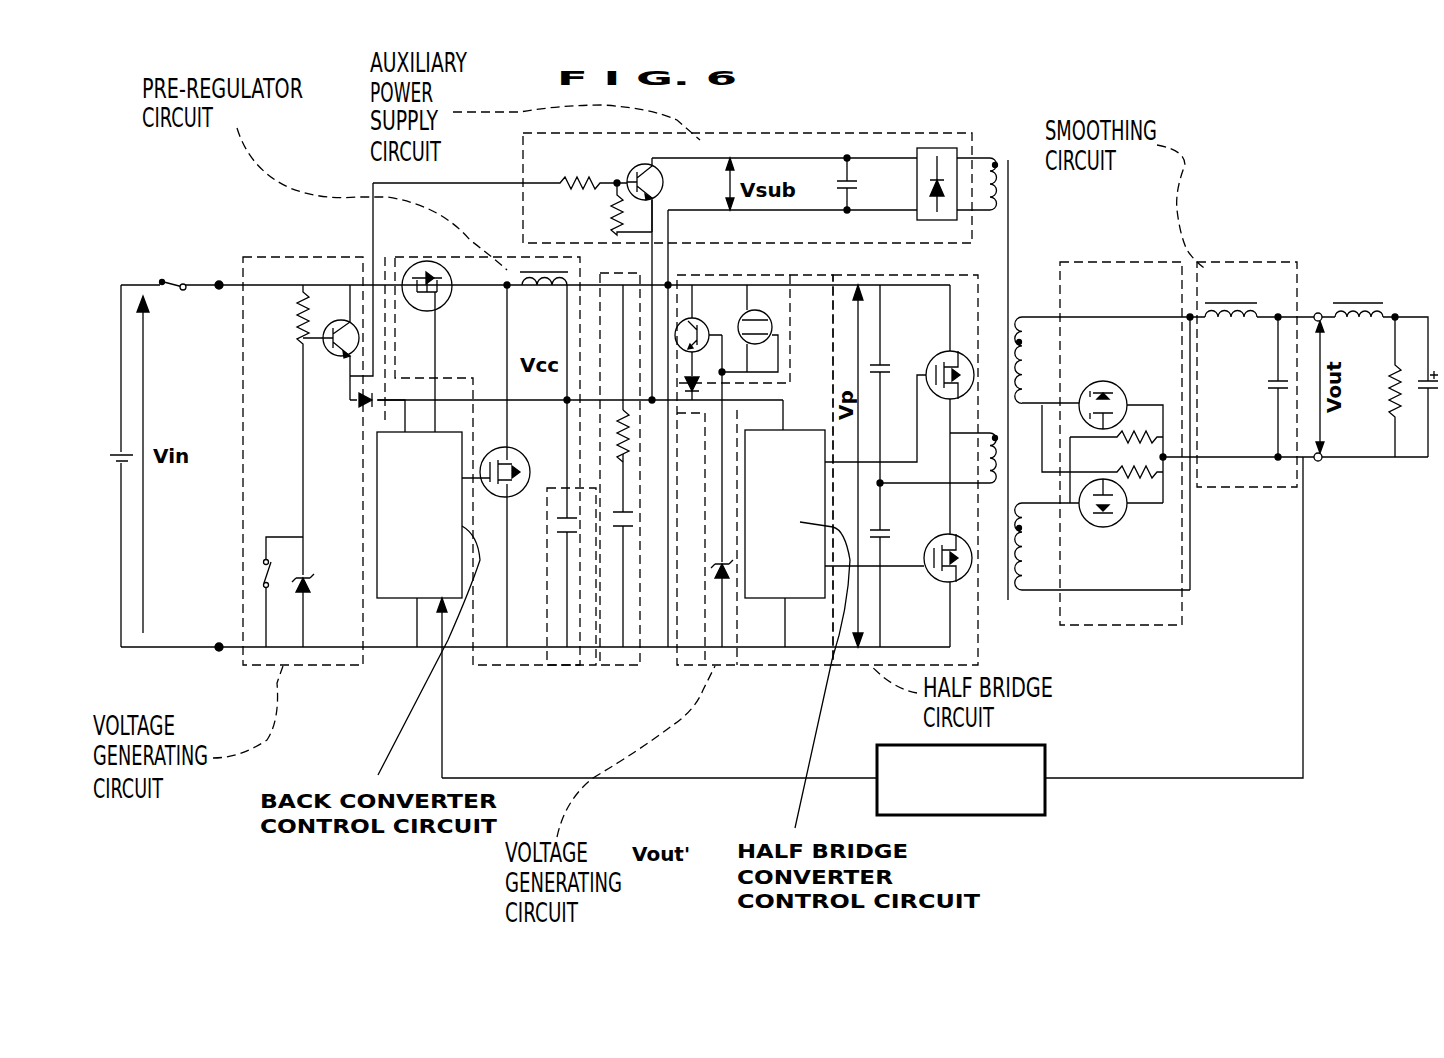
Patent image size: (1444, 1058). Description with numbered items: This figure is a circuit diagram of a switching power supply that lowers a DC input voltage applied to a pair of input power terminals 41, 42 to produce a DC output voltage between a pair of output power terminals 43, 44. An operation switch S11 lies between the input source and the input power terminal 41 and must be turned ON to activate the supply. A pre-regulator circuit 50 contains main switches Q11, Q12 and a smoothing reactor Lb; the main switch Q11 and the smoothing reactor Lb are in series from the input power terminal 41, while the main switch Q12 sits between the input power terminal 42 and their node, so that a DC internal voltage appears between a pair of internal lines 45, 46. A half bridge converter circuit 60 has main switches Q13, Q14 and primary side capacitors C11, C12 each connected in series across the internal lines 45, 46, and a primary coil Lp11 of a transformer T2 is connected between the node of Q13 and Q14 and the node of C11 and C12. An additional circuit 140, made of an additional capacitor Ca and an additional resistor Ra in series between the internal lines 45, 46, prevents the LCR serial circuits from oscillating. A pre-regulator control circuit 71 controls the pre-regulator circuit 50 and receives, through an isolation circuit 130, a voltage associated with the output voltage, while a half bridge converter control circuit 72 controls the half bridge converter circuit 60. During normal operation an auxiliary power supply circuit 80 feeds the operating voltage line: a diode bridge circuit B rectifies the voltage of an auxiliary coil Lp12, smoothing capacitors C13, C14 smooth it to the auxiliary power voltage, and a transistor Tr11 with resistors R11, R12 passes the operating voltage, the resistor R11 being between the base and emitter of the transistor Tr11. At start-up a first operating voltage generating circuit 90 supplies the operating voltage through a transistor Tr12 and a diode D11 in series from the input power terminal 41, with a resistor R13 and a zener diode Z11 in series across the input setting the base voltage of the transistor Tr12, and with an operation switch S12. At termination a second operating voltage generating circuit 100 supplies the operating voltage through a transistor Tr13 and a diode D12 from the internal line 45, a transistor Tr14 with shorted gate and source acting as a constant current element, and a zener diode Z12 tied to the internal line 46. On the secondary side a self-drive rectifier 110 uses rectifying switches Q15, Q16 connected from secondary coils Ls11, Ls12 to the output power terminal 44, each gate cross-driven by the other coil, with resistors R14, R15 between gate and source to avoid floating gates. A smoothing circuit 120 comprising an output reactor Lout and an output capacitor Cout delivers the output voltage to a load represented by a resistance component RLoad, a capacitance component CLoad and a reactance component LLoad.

The operation switch S11 is at (162, 276).
The input power terminal 41 is at (220, 282).
The input power terminal 42 is at (219, 652).
The first operating voltage generating circuit 90 is at (283, 666).
The resistor R13 is at (296, 324).
The transistor Tr12 is at (346, 318).
The diode D11 is at (380, 406).
The operation switch S12 is at (261, 575).
The zener diode Z11 is at (306, 582).
The pre-regulator control circuit 71 is at (395, 598).
The main switch Q11 is at (443, 302).
The main switch Q12 is at (502, 456).
The smoothing reactor Lb is at (556, 288).
The smoothing capacitor C14 is at (571, 538).
The pre-regulator circuit 50 is at (520, 667).
The additional circuit 140 is at (650, 667).
The additional resistor Ra is at (626, 440).
The additional capacitor Ca is at (632, 521).
The zener diode Z12 is at (723, 587).
The second operating voltage generating circuit 100 is at (709, 666).
The internal line 45 is at (753, 329).
The transistor Tr13 is at (705, 322).
The transistor Tr14 is at (760, 311).
The diode D12 is at (700, 392).
The half bridge converter control circuit 72 is at (760, 600).
The internal line 46 is at (794, 658).
The half bridge converter circuit 60 is at (850, 665).
The primary side capacitor C11 is at (878, 380).
The primary side capacitor C12 is at (888, 534).
The main switch Q13 is at (938, 348).
The main switch Q14 is at (946, 588).
The primary coil Lp11 is at (993, 503).
The auxiliary coil Lp12 is at (969, 214).
The transformer T2 is at (1007, 143).
The diode bridge circuit B is at (938, 148).
The auxiliary power supply circuit 80 is at (825, 133).
The resistor R12 is at (568, 178).
The resistor R11 is at (612, 195).
The transistor Tr11 is at (663, 182).
The smoothing capacitor C13 is at (878, 182).
The rectifier 110 is at (1115, 625).
The smoothing circuit 120 is at (1237, 487).
The secondary coil Ls11 is at (1028, 353).
The secondary coil Ls12 is at (1024, 556).
The rectifying switch Q15 is at (1098, 381).
The rectifying switch Q16 is at (1111, 527).
The resistor R14 is at (1128, 422).
The resistor R15 is at (1135, 486).
The output reactor Lout is at (1228, 301).
The output capacitor Cout is at (1274, 386).
The output power terminal 43 is at (1315, 313).
The output power terminal 44 is at (1321, 461).
The reactance component LLoad is at (1354, 296).
The resistance component RLoad is at (1392, 410).
The capacitance component CLoad is at (1436, 436).
The isolation circuit 130 is at (975, 815).